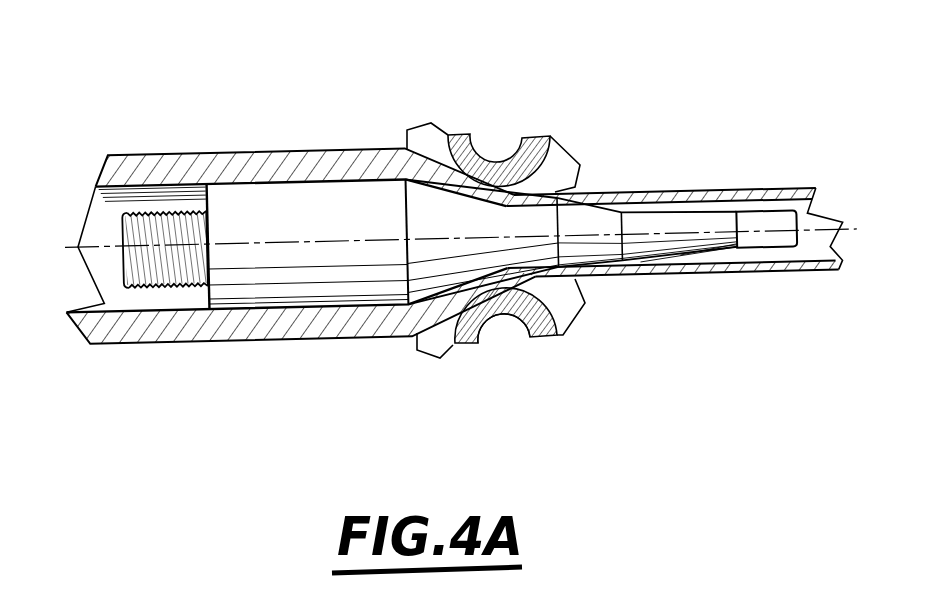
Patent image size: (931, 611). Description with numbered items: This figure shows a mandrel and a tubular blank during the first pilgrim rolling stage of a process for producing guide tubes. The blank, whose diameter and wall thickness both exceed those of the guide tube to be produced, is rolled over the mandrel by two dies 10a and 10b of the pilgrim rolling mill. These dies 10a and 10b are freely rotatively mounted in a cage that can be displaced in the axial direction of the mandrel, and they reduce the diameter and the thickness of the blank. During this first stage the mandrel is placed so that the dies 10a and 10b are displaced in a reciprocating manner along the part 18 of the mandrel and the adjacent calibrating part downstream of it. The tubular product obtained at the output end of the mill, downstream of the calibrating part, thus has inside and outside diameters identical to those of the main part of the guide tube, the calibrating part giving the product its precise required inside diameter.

The die 10a is at (560, 158).
The die 10b is at (563, 308).
The part of the mandrel 18 is at (495, 318).